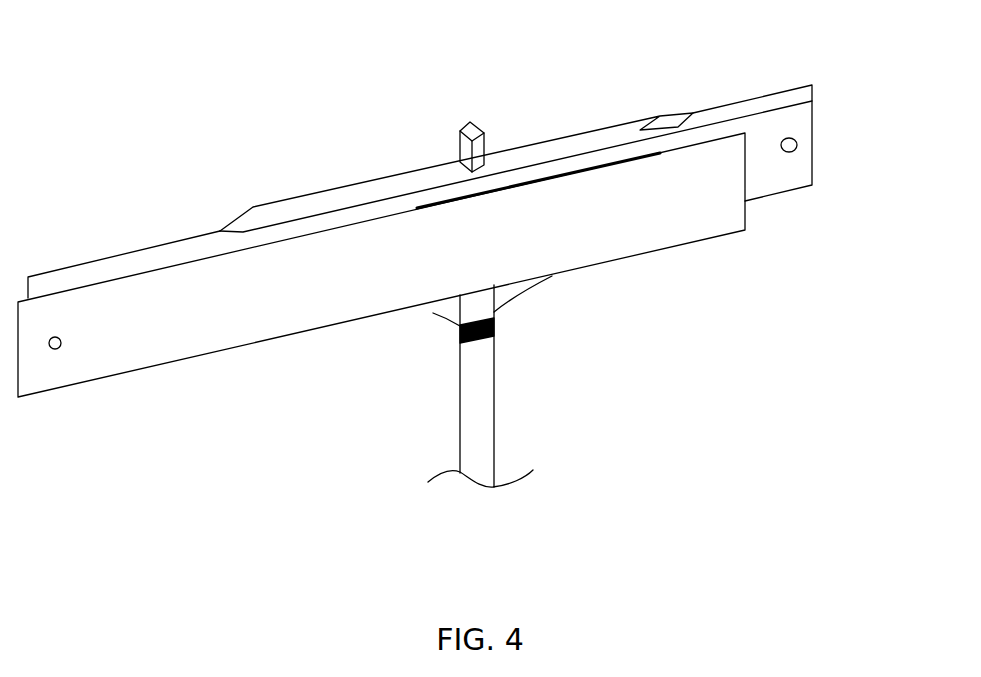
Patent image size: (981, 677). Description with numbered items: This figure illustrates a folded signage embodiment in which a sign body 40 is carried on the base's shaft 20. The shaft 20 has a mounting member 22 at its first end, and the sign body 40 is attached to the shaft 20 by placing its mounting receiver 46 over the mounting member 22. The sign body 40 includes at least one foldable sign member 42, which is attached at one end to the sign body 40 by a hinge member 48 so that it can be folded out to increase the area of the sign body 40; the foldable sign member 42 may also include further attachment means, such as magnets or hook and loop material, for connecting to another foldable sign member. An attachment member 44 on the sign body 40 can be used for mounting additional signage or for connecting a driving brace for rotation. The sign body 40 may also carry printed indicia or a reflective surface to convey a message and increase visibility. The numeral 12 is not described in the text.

The front plate 12 is at (109, 360).
The shaft 20 is at (482, 438).
The mounting member 22 is at (458, 338).
The sign body 40 is at (640, 124).
The foldable sign member 42 is at (786, 123).
The attachment member 44 is at (473, 124).
The mounting receiver 46 is at (494, 318).
The hinge member 48 is at (797, 152).